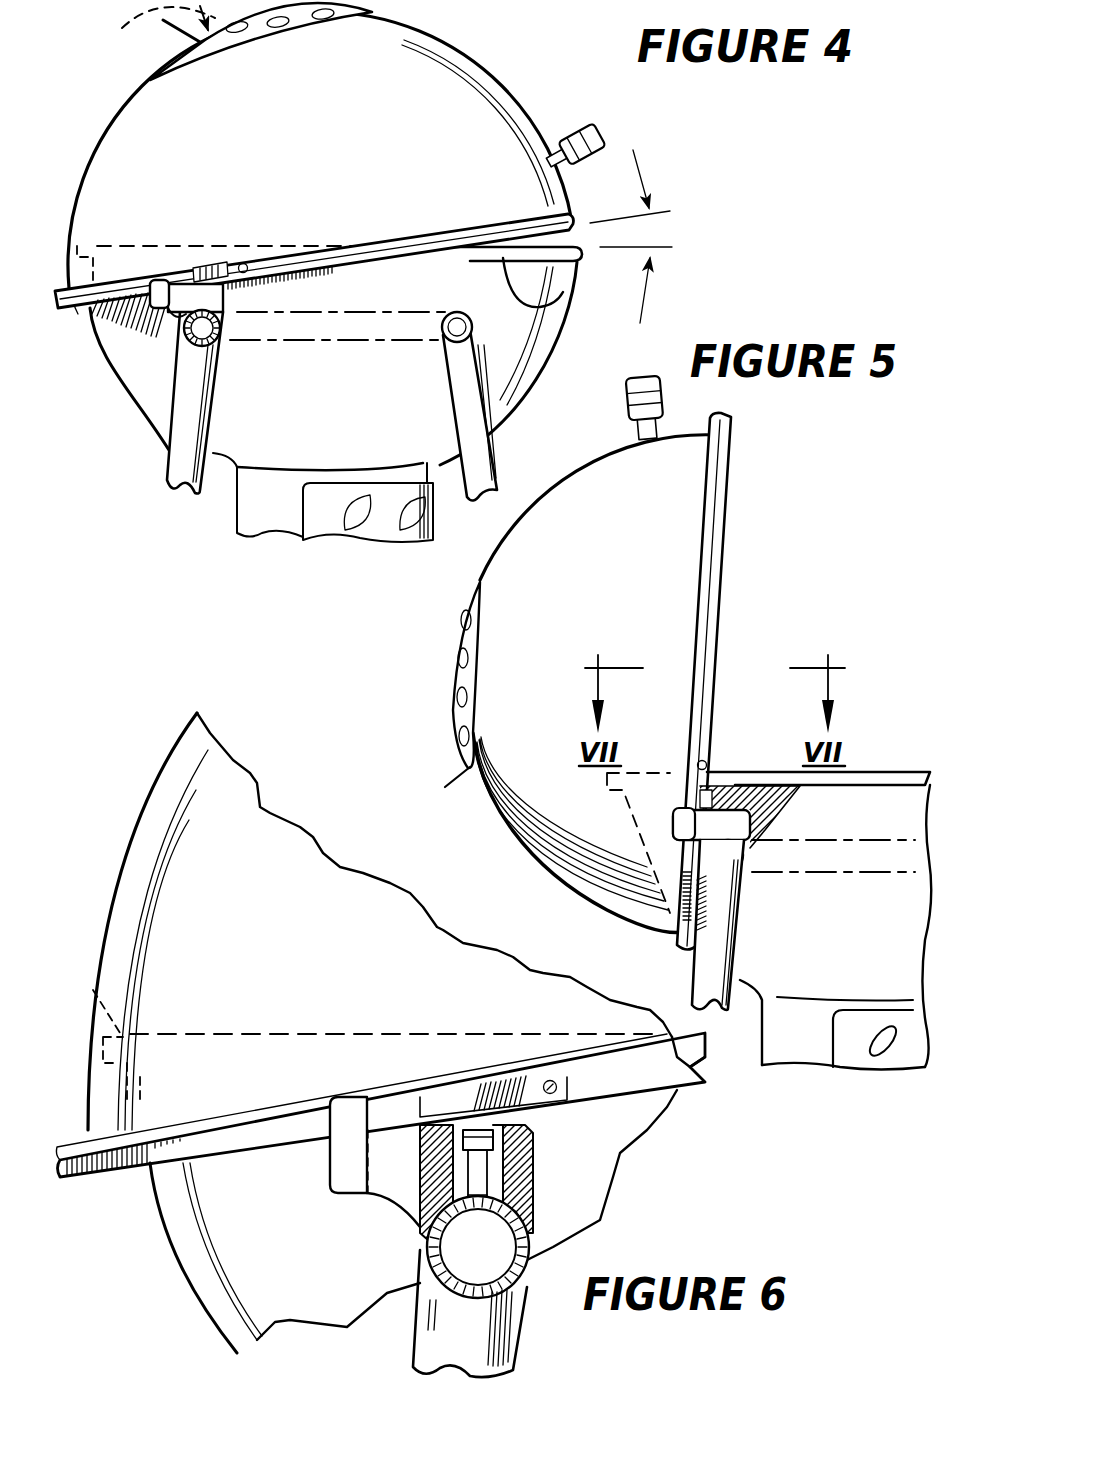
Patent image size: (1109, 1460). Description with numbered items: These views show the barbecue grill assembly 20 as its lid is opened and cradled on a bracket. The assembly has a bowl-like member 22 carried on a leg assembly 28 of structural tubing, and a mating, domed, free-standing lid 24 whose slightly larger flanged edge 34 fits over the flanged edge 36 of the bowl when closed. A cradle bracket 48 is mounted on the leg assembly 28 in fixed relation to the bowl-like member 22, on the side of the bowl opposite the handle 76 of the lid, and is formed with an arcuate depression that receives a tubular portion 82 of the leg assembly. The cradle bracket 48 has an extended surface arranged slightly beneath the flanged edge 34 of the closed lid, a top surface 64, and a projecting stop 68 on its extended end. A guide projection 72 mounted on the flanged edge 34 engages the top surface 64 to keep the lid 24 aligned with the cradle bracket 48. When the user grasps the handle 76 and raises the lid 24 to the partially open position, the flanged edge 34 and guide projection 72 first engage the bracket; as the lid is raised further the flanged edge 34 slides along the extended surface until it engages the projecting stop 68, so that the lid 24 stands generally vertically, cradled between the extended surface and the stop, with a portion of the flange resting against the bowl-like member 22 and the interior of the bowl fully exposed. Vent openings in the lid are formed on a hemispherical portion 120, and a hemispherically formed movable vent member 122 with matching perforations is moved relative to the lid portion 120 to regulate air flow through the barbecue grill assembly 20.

In FIG. 4, the barbecue grill assembly 20 is at (662, 108).
In FIG. 5, the barbecue grill assembly 20 is at (856, 524).
In FIG. 6, the barbecue grill assembly 20 is at (117, 746).
In FIG. 4, the bowl-like member 22 is at (163, 397).
In FIG. 5, the bowl-like member 22 is at (827, 983).
In FIG. 6, the bowl-like member 22 is at (217, 1290).
In FIG. 4, the lid 24 is at (130, 117).
In FIG. 5, the lid 24 is at (540, 858).
In FIG. 6, the lid 24 is at (150, 827).
In FIG. 4, the leg assembly 28 is at (176, 452).
In FIG. 5, the leg assembly 28 is at (748, 957).
In FIG. 6, the leg assembly 28 is at (418, 1335).
In FIG. 4, the flanged edge of the lid 34 is at (500, 230).
In FIG. 5, the flanged edge of the lid 34 is at (707, 603).
In FIG. 6, the flanged edge of the lid 34 is at (123, 1177).
In FIG. 4, the flanged edge of the bowl 36 is at (560, 295).
In FIG. 5, the flanged edge of the bowl 36 is at (867, 776).
In FIG. 6, the flanged edge of the bowl 36 is at (90, 983).
In FIG. 4, the cradle bracket 48 is at (170, 330).
In FIG. 5, the cradle bracket 48 is at (782, 822).
In FIG. 6, the cradle bracket 48 is at (540, 1163).
In FIG. 5, the top surface 64 is at (740, 786).
In FIG. 6, the top surface 64 is at (517, 1117).
In FIG. 4, the projecting stop 68 is at (167, 278).
In FIG. 5, the projecting stop 68 is at (683, 805).
In FIG. 6, the projecting stop 68 is at (378, 1120).
In FIG. 4, the guide projection 72 is at (217, 270).
In FIG. 5, the guide projection 72 is at (707, 782).
In FIG. 6, the guide projection 72 is at (473, 1093).
In FIG. 4, the handle 76 is at (580, 158).
In FIG. 5, the handle 76 is at (630, 400).
In FIG. 6, the tubular portion 82 is at (428, 1259).
In FIG. 4, the hemispherical portion 120 is at (143, 24).
In FIG. 4, the movable vent member 122 is at (157, 81).
In FIG. 5, the movable vent member 122 is at (462, 604).